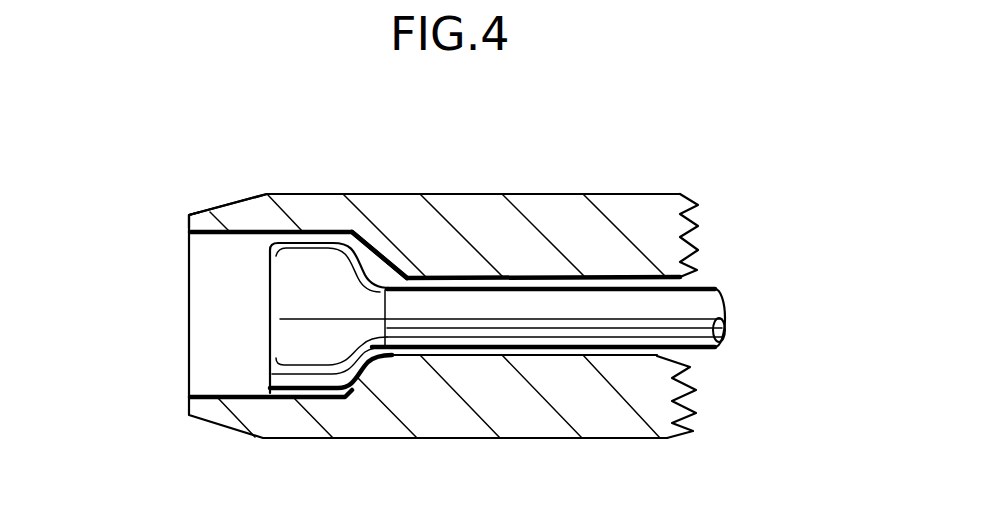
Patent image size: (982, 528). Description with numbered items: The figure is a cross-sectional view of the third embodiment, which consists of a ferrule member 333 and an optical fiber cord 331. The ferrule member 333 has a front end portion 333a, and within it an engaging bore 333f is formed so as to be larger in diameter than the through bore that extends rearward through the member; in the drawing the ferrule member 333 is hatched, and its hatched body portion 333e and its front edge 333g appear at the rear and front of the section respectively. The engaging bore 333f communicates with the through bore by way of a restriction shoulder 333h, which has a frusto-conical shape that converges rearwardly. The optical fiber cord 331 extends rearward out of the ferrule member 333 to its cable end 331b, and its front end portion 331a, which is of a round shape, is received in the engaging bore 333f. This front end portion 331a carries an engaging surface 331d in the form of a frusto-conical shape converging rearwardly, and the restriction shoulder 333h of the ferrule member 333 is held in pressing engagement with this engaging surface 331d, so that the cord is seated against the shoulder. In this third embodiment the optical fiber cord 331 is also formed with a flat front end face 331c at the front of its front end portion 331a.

The ferrule member 333 is at (583, 194).
The front end portion of the ferrule member 333a is at (254, 197).
The front edge 333g is at (188, 213).
The engaging bore 333f is at (233, 235).
The restriction shoulder 333h is at (372, 260).
The hatched body portion 333e is at (643, 213).
The optical fiber cord 331 is at (687, 288).
The front end portion of the optical fiber cord 331a is at (292, 282).
The cable end 331b is at (727, 328).
The flat front end face 331c is at (272, 352).
The engaging surface 331d is at (325, 402).